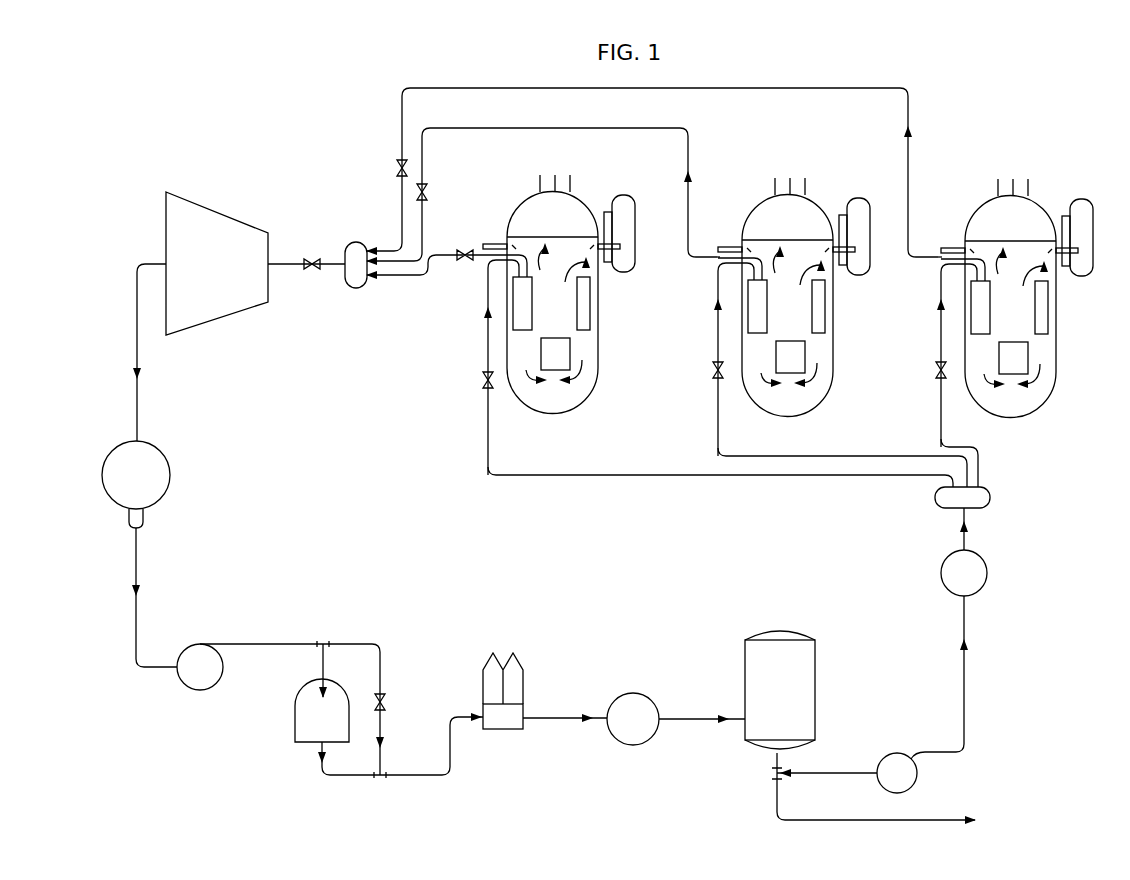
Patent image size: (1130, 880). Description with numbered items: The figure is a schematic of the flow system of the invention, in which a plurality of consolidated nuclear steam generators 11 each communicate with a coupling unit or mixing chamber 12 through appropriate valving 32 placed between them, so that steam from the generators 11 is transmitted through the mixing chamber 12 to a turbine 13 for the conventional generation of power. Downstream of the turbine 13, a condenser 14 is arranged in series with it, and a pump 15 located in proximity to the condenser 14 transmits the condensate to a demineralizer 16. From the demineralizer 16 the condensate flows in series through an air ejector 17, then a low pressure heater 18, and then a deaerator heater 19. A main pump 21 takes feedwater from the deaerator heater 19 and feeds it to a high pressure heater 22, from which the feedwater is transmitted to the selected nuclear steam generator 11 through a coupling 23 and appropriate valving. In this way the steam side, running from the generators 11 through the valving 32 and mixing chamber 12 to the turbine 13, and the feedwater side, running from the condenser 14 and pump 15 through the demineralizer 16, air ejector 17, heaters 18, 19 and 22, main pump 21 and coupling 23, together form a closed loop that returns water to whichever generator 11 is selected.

The consolidated nuclear steam generator 11 is at (599, 327).
The coupling unit or mixing chamber 12 is at (353, 288).
The turbine 13 is at (215, 306).
The condenser 14 is at (128, 462).
The pump 15 is at (195, 650).
The demineralizer 16 is at (310, 700).
The air ejector 17 is at (523, 680).
The low pressure heater 18 is at (637, 735).
The deaerator heater 19 is at (808, 664).
The main pump 21 is at (915, 773).
The high pressure heater 22 is at (972, 563).
The coupling 23 is at (992, 489).
The steam line valve 32 is at (400, 120).